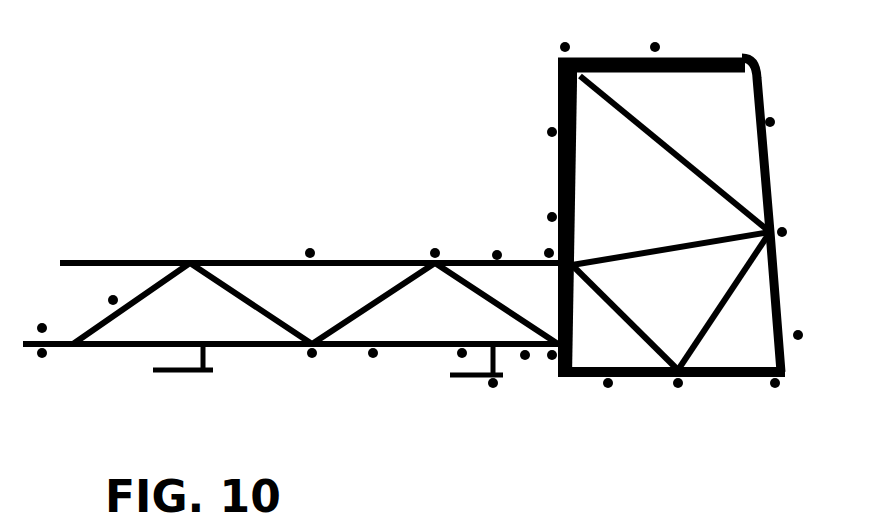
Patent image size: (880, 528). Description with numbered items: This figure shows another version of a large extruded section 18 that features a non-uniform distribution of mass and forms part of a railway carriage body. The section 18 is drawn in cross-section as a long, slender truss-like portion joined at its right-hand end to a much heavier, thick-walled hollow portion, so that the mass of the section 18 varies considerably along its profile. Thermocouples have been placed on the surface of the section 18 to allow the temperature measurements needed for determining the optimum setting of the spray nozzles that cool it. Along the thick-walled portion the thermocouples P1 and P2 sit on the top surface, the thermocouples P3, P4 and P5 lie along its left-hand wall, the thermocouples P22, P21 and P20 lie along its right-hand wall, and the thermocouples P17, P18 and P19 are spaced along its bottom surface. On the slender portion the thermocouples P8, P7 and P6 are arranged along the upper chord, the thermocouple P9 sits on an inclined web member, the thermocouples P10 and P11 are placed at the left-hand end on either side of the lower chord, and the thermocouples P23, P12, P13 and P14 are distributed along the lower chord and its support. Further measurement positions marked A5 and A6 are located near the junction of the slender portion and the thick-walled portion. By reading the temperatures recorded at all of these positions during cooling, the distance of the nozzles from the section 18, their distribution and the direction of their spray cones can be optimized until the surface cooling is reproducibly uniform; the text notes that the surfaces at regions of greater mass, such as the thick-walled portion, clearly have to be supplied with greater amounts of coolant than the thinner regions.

The extruded section 18 is at (254, 386).
The thermocouple P1 is at (657, 36).
The thermocouple P2 is at (567, 36).
The thermocouple P3 is at (535, 130).
The thermocouple P4 is at (535, 214).
The thermocouple P5 is at (534, 242).
The thermocouple P6 is at (490, 242).
The thermocouple P7 is at (430, 241).
The thermocouple P8 is at (308, 241).
The thermocouple P9 is at (97, 297).
The thermocouple P10 is at (40, 317).
The thermocouple P11 is at (40, 367).
The thermocouple P12 is at (373, 369).
The thermocouple P13 is at (436, 359).
The thermocouple P14 is at (488, 397).
The thermocouple P17 is at (603, 397).
The thermocouple P18 is at (678, 397).
The thermocouple P19 is at (770, 397).
The thermocouple P20 is at (823, 337).
The thermocouple P21 is at (807, 234).
The thermocouple P22 is at (795, 124).
The thermocouple P23 is at (306, 369).
The attachment point A5 is at (517, 365).
The attachment point A6 is at (553, 363).